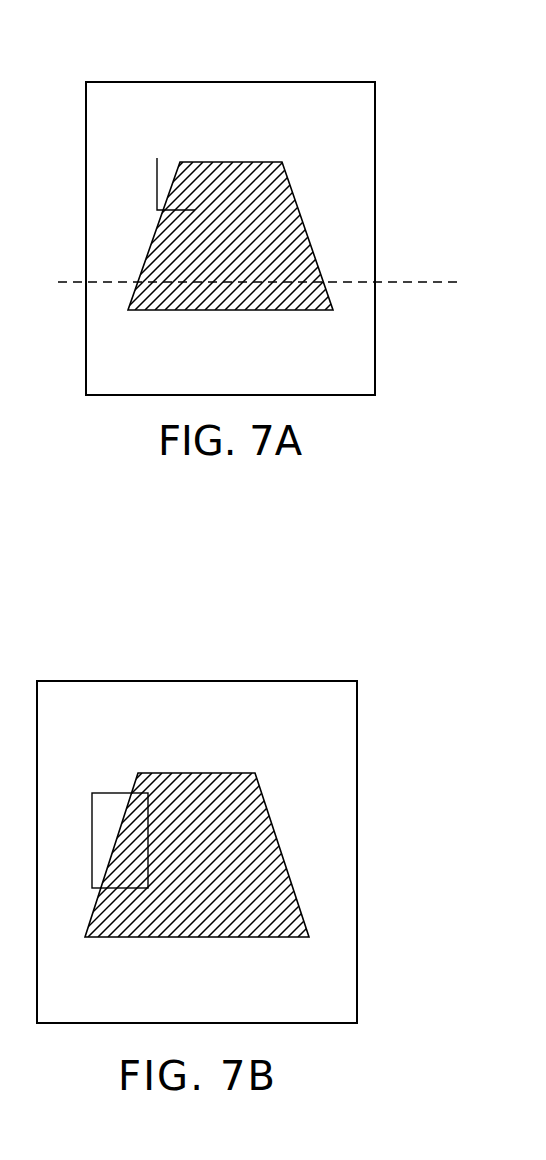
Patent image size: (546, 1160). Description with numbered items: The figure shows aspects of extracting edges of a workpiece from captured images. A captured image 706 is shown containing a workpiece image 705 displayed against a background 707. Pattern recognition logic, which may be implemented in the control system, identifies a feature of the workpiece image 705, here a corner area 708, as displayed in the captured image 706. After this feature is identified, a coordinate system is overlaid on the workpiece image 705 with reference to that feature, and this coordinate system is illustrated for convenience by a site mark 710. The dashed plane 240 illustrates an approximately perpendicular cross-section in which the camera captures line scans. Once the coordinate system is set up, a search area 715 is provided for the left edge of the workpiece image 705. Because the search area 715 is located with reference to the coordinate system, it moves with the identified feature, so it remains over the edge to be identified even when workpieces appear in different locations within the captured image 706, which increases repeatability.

In FIG. 7A, the workpiece image 705 is at (322, 311).
In FIG. 7B, the workpiece image 705 is at (297, 937).
In FIG. 7A, the captured image 706 is at (302, 82).
In FIG. 7B, the captured image 706 is at (117, 681).
In FIG. 7A, the background 707 is at (306, 138).
In FIG. 7B, the background 707 is at (311, 732).
In FIG. 7A, the corner area 708 is at (173, 143).
In FIG. 7A, the site mark 710 is at (157, 178).
In FIG. 7B, the search area 715 is at (108, 793).
In FIG. 7A, the dashed plane 240 is at (417, 283).